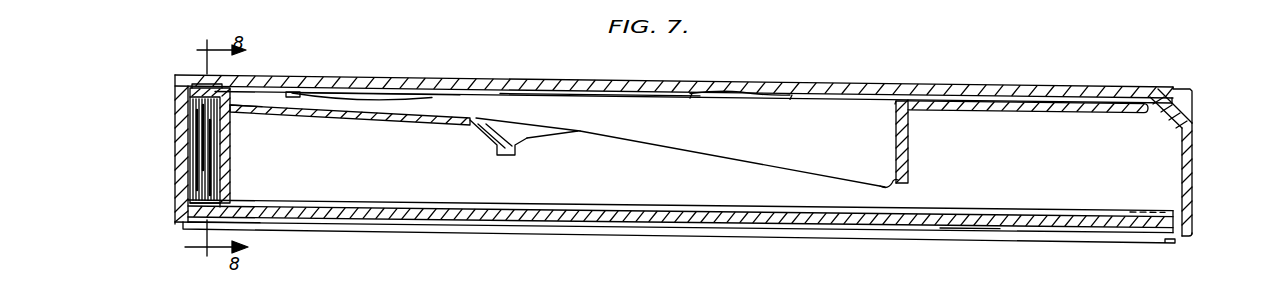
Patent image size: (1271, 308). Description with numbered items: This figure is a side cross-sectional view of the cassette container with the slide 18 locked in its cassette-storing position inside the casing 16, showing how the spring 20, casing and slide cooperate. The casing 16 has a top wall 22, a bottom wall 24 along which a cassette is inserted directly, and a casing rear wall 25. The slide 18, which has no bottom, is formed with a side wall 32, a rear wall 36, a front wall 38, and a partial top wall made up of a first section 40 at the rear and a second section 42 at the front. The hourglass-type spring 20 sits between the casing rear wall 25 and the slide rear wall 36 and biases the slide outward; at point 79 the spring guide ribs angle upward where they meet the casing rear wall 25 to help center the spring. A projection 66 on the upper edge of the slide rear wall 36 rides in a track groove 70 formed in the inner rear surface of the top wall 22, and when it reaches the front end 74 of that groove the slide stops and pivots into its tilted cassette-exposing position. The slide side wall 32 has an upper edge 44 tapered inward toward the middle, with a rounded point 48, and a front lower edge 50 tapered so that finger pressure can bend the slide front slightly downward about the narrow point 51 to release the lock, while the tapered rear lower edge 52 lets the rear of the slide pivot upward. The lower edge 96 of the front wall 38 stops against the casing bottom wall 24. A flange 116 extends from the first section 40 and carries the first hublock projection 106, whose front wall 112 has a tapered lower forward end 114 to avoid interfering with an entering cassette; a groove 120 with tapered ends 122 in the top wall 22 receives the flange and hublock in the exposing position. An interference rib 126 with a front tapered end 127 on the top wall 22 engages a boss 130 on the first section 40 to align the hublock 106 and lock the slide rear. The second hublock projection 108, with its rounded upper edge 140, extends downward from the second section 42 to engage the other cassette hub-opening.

The casing 16 is at (874, 78).
The slide 18 is at (1208, 126).
The spring 20 is at (205, 131).
The top wall 22 is at (410, 80).
The bottom wall 24 is at (383, 229).
The casing rear wall 25 is at (178, 174).
The side wall 32 is at (622, 187).
The rear wall 36 is at (232, 156).
The front wall 38 is at (1194, 164).
The top wall first section 40 is at (262, 108).
The top wall second section 42 is at (963, 98).
The upper edge 44 is at (778, 170).
The point 48 is at (889, 183).
The lower edge 50 is at (1062, 236).
The point 51 is at (960, 229).
The tapered rear lower edge 52 is at (242, 226).
The projection 66 is at (230, 82).
The track groove 70 is at (472, 90).
The front end 74 is at (530, 92).
The point 79 is at (195, 212).
The lower edge 96 is at (1194, 230).
The first hublock projection 106 is at (512, 153).
The second hublock projection 108 is at (909, 164).
The front wall 112 is at (515, 142).
The tapered lower forward end 114 is at (562, 131).
The flange 116 is at (392, 118).
The groove 120 is at (735, 90).
The tapered end 122 is at (690, 92).
The interference rib 126 is at (368, 96).
The front tapered end 127 is at (405, 99).
The boss 130 is at (295, 95).
The upper edge 140 is at (888, 103).